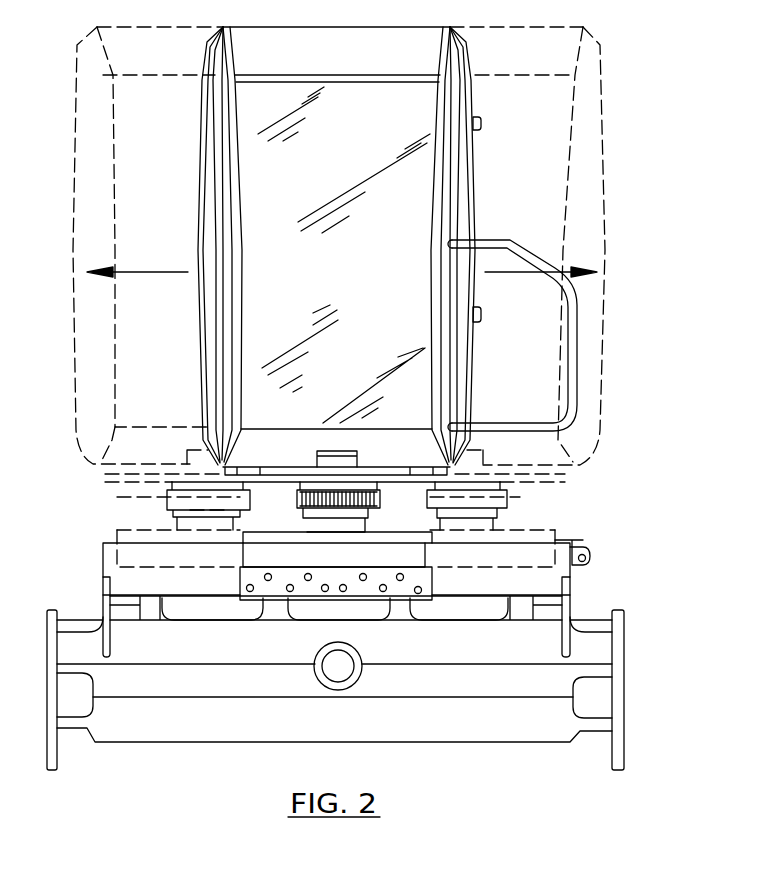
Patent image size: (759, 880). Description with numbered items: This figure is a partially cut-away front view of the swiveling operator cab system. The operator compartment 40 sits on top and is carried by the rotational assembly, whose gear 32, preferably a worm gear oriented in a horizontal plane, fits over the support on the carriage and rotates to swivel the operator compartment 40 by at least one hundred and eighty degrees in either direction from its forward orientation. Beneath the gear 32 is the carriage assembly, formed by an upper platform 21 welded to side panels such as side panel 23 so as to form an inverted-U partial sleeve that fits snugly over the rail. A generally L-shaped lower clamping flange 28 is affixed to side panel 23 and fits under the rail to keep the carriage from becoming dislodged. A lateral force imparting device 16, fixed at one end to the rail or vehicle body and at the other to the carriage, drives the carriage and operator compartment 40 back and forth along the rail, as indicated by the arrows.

The operator compartment 40 is at (615, 293).
The upper platform 21 is at (257, 537).
The gear 32 is at (368, 500).
The side panel 23 is at (410, 553).
The lower clamping flange 28 is at (402, 592).
The lateral force imparting device 16 is at (583, 547).